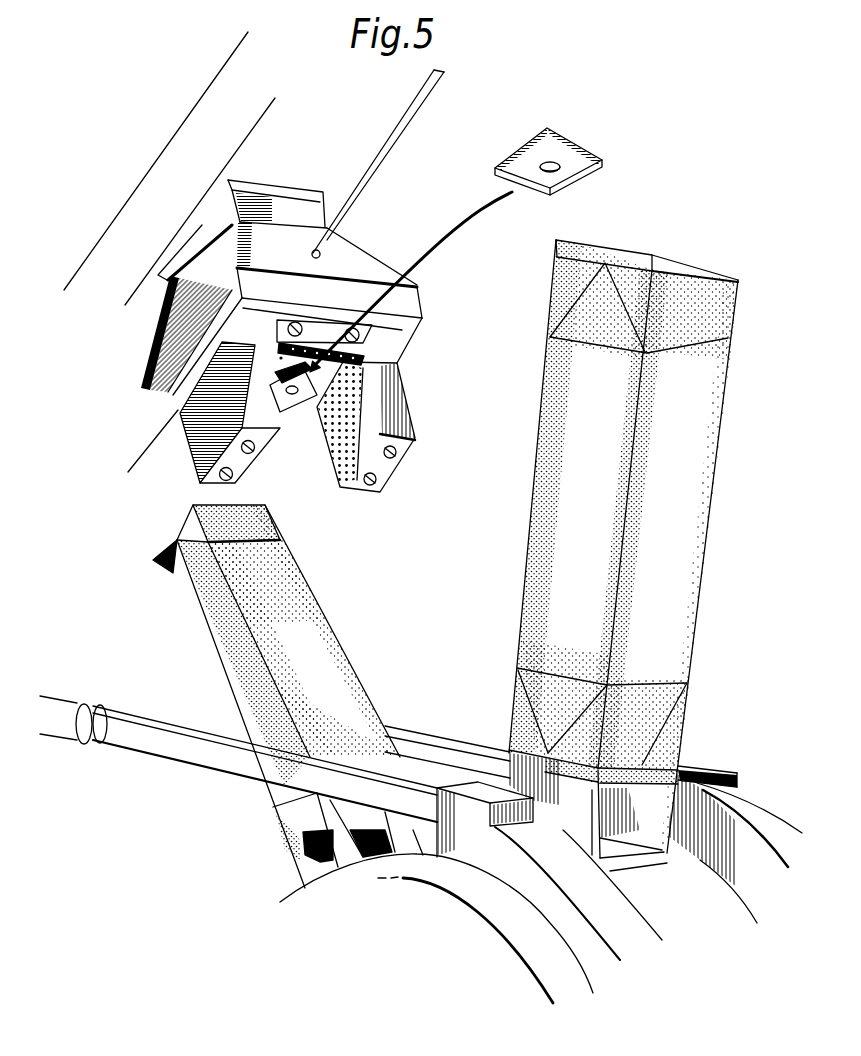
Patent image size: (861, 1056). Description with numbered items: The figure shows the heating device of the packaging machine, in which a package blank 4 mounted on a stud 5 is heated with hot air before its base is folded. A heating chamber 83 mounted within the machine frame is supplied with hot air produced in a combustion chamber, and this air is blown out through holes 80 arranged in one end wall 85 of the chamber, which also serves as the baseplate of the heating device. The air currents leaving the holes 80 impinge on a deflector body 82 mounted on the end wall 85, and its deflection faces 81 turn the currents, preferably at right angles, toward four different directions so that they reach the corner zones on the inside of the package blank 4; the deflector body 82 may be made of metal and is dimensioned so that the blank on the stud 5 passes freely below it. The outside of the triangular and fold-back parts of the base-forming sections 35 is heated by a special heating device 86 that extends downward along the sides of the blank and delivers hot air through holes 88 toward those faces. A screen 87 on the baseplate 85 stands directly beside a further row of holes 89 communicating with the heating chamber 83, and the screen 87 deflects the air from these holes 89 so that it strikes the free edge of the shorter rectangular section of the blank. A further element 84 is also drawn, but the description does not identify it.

The package blank 4 is at (703, 507).
The stud 5 is at (669, 830).
The base-forming sections 35 is at (722, 330).
The holes 80 is at (306, 402).
The deflection faces 81 is at (275, 377).
The deflector body 82 is at (600, 177).
The heating chamber 83 is at (285, 200).
The guide rod 84 is at (384, 161).
The end wall 85 is at (413, 330).
The special heating device 86 is at (207, 457).
The screen 87 is at (307, 343).
The holes 88 is at (339, 470).
The further row of holes 89 is at (278, 345).